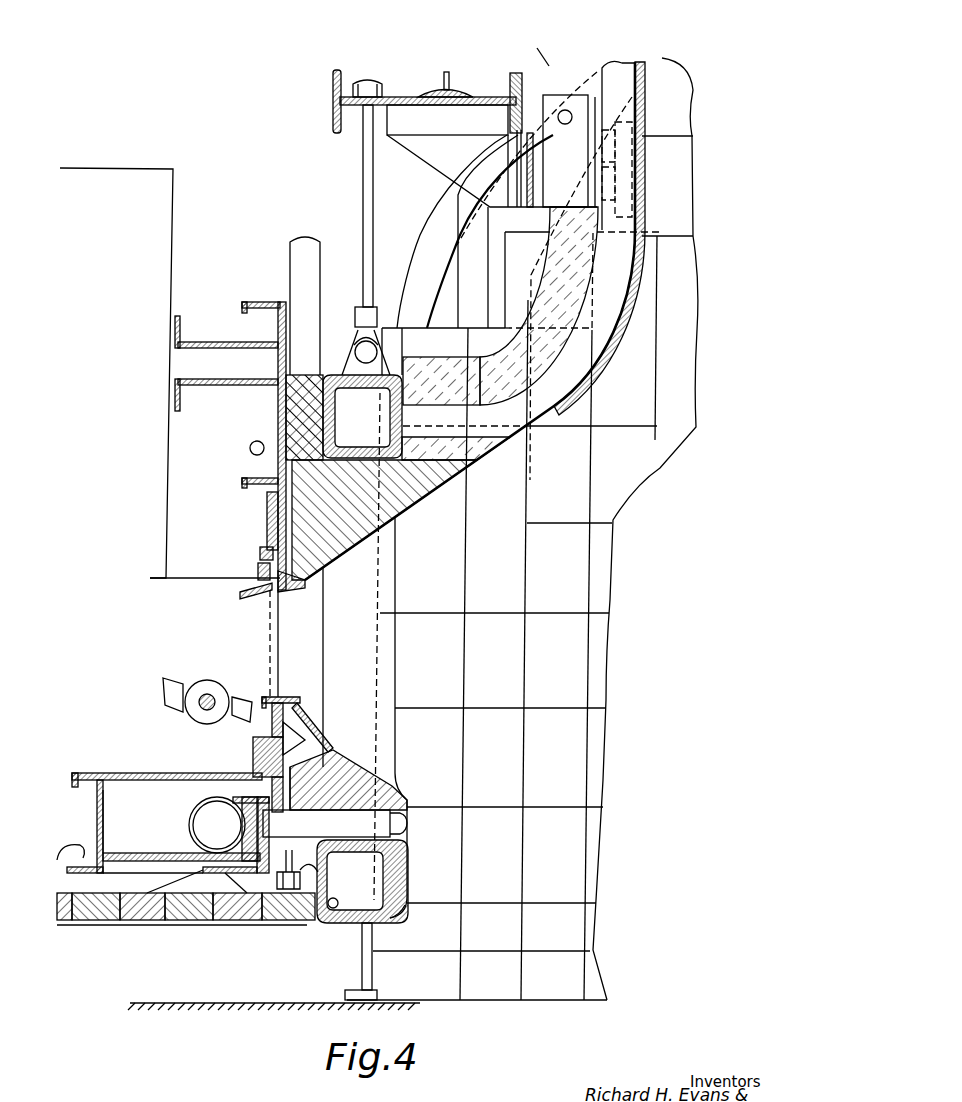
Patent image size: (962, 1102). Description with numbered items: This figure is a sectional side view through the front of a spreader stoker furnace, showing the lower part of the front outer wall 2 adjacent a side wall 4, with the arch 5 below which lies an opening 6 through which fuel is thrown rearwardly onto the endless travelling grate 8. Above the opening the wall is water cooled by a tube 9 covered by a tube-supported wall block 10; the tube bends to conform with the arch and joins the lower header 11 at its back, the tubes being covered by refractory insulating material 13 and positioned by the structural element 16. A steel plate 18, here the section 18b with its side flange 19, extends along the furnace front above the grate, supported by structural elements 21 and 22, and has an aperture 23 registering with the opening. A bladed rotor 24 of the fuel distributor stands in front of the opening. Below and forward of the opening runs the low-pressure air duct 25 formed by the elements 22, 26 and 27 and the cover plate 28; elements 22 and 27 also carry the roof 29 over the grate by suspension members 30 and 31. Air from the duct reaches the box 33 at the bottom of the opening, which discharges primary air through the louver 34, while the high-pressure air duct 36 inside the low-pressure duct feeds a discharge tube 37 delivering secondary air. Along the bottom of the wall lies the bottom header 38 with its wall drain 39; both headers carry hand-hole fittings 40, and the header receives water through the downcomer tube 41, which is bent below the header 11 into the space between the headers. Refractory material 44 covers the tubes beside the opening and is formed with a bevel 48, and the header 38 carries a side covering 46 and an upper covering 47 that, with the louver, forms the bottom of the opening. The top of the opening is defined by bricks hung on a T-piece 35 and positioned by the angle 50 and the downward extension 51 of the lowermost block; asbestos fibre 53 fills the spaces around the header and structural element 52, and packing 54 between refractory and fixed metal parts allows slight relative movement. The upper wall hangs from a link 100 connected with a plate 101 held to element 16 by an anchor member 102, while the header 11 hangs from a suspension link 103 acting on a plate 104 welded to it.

The front outer wall 2 is at (640, 104).
The side wall 4 is at (645, 294).
The arch 5 is at (537, 380).
The opening 6 is at (352, 603).
The endless travelling grate 8 is at (312, 1003).
The tube 9 is at (613, 78).
The wall block 10 is at (592, 373).
The lower header 11 is at (432, 462).
The refractory insulating material 13 is at (556, 276).
The structural element 16 is at (443, 88).
The steel plate 18 is at (276, 540).
The plate section 18b is at (260, 557).
The side flange 19 is at (265, 545).
The structural element 21 is at (258, 480).
The structural element 22 is at (233, 798).
The aperture 23 is at (272, 658).
The bladed rotor 24 is at (205, 690).
The low-pressure air duct 25 is at (138, 773).
The structural element 26 is at (137, 861).
The structural element 27 is at (100, 818).
The cover plate 28 is at (105, 773).
The roof 29 is at (120, 922).
The suspension member 30 is at (204, 900).
The suspension member 31 is at (66, 925).
The box 33 is at (253, 740).
The louver 34 is at (320, 722).
The T-piece 35 is at (395, 520).
The high-pressure air duct 36 is at (205, 815).
The discharge tube 37 is at (357, 824).
The bottom header 38 is at (375, 883).
The wall drain 39 is at (333, 908).
The hand-hole fitting 40 is at (362, 368).
The downcomer tube 41 is at (289, 250).
The refractory material 44 is at (395, 660).
The side covering 46 is at (396, 912).
The upper covering 47 is at (395, 800).
The bevel 48 is at (360, 567).
The angle 50 is at (262, 582).
The downward extension 51 is at (480, 453).
The structural element 52 is at (278, 410).
The asbestos fibre 53 is at (282, 445).
The packing 54 is at (312, 586).
The link 100 is at (560, 110).
The plate 101 is at (595, 170).
The anchor member 102 is at (537, 192).
The suspension link 103 is at (370, 214).
The plate 104 is at (355, 328).